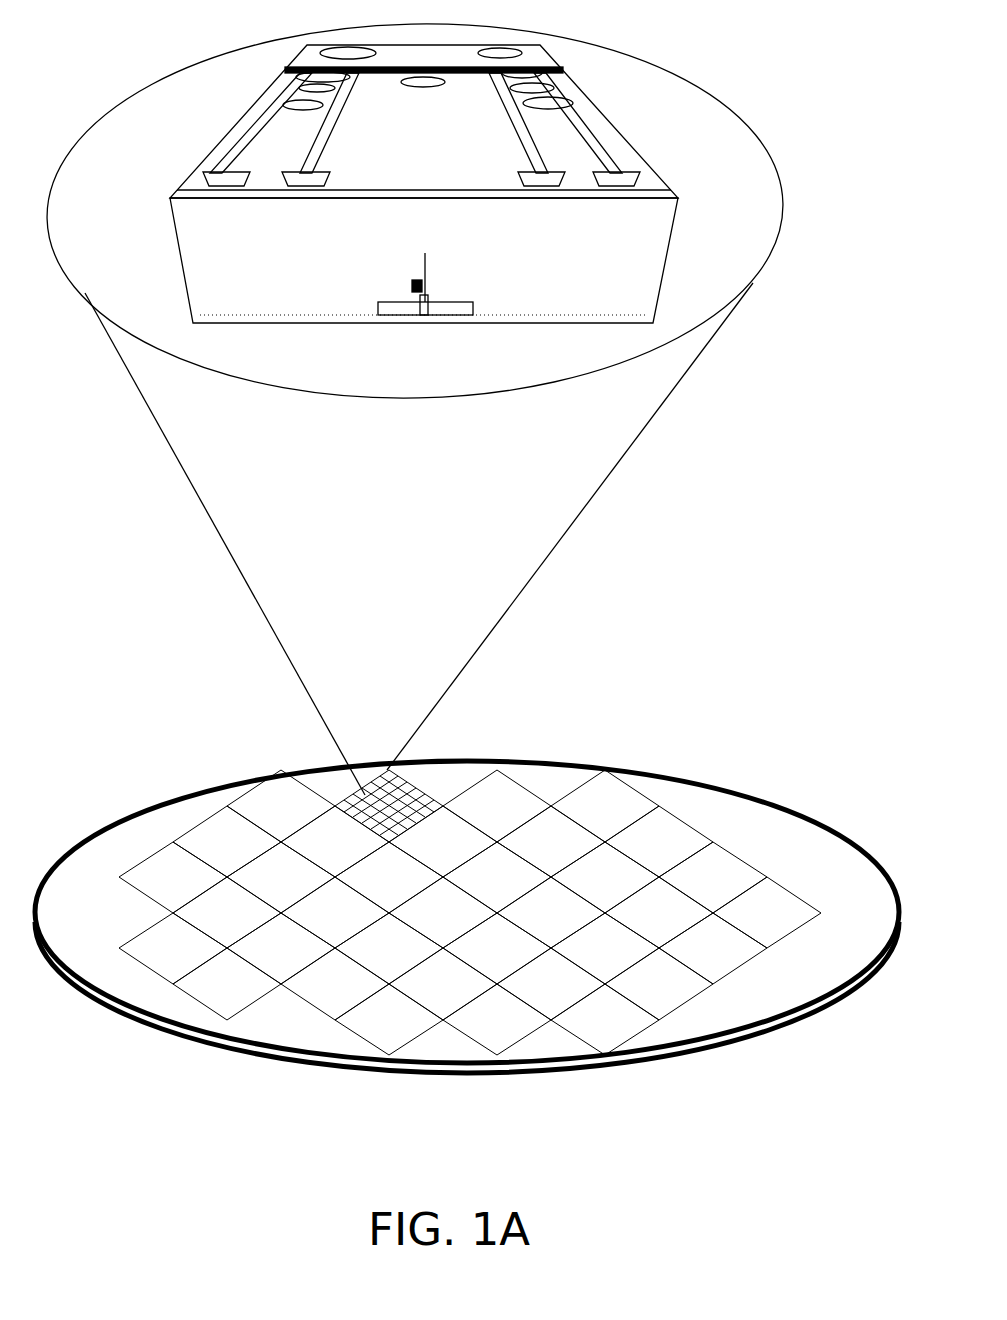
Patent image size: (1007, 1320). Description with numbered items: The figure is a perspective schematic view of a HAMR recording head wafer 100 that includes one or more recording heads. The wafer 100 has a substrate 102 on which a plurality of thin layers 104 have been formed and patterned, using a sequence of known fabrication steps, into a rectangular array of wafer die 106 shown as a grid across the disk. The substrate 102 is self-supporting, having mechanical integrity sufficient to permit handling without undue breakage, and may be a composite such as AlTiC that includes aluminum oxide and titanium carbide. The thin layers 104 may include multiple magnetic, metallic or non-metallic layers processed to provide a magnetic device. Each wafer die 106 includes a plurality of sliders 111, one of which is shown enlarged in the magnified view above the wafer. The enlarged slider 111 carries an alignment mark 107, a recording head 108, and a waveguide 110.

The HAMR recording head wafer 100 is at (826, 716).
The substrate 102 is at (135, 1023).
The thin layers 104 is at (672, 1050).
The wafer die 106 is at (160, 868).
The alignment mark 107 is at (412, 282).
The recording head 108 is at (428, 316).
The waveguide 110 is at (427, 272).
The slider 111 is at (742, 122).